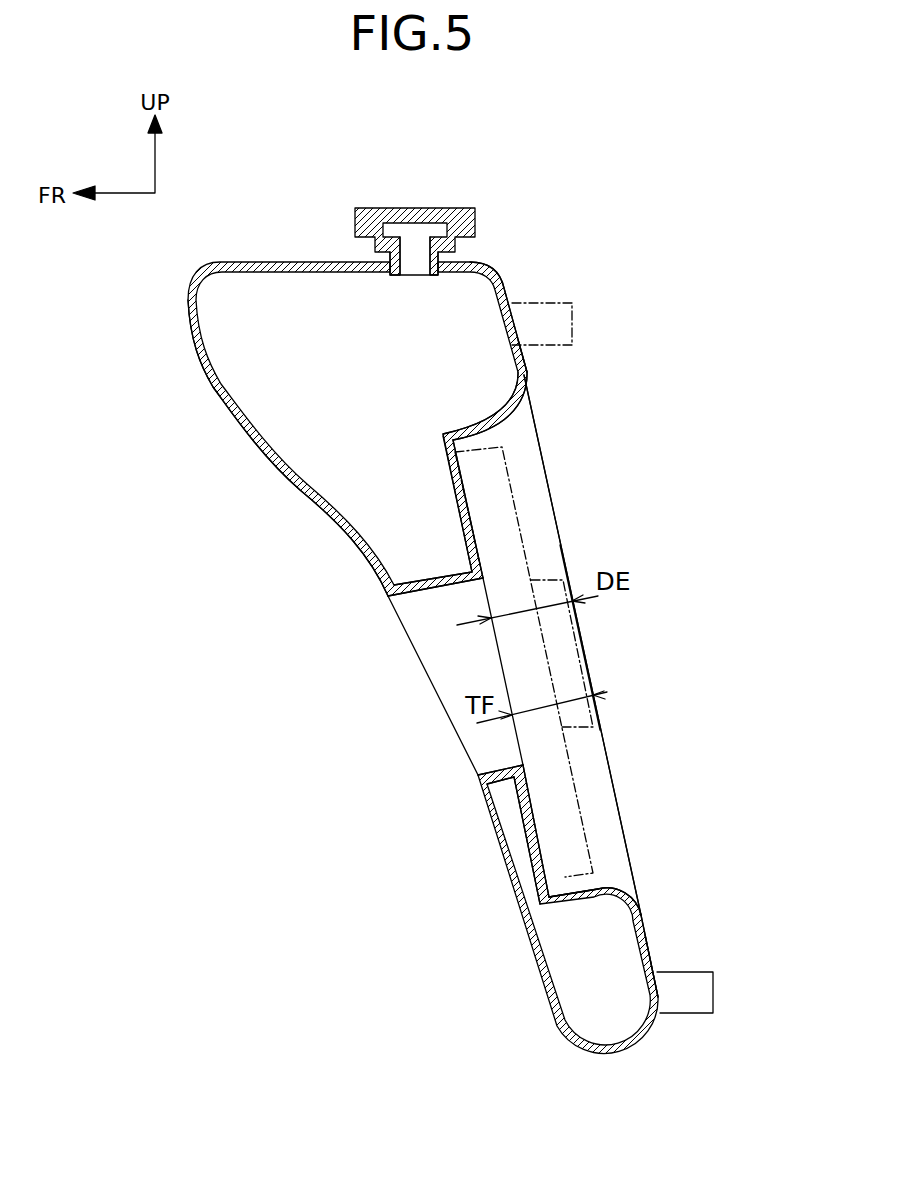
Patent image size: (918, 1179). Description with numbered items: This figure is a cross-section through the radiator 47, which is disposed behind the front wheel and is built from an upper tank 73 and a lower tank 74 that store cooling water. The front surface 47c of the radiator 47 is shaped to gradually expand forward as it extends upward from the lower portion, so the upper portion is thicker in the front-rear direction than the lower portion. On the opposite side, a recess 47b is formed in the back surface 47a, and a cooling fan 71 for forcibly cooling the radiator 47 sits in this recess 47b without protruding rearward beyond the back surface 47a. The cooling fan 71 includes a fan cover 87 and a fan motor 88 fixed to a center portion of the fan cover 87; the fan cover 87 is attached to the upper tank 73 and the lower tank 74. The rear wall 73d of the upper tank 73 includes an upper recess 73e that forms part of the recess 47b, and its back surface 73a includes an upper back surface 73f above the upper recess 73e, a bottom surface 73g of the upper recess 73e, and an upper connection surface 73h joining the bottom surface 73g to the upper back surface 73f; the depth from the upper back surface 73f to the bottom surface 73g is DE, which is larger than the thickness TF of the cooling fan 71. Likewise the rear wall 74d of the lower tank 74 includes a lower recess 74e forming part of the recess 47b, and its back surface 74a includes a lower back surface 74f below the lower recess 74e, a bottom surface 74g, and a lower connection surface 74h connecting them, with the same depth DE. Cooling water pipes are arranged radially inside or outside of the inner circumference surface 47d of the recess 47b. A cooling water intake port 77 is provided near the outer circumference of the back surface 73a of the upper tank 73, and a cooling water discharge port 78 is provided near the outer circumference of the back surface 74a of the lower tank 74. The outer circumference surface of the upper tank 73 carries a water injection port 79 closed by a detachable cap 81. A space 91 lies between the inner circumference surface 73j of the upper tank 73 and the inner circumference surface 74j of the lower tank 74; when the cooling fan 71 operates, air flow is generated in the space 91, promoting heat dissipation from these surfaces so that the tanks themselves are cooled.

The radiator 47 is at (593, 226).
The back surface 47a is at (574, 548).
The recess 47b is at (511, 426).
The front surface 47c is at (281, 474).
The inner circumference surface 47d is at (565, 876).
The cooling fan 71 is at (592, 641).
The upper tank 73 is at (299, 251).
The back surface 73a is at (534, 354).
The rear wall 73d is at (508, 292).
The upper recess 73e is at (486, 526).
The upper back surface 73f is at (525, 372).
The bottom surface 73g is at (463, 494).
The upper connection surface 73h is at (515, 438).
The inner circumference surface 73j is at (433, 592).
The lower tank 74 is at (515, 938).
The back surface 74a is at (656, 934).
The rear wall 74d is at (646, 928).
The lower recess 74e is at (539, 780).
The lower back surface 74f is at (653, 957).
The bottom surface 74g is at (536, 811).
The lower connection surface 74h is at (603, 890).
The inner circumference surface 74j is at (497, 767).
The cooling water intake port 77 is at (572, 328).
The cooling water discharge port 78 is at (700, 989).
The water injection port 79 is at (441, 256).
The cap 81 is at (408, 208).
The fan cover 87 is at (568, 745).
The fan motor 88 is at (585, 671).
The space 91 is at (420, 688).